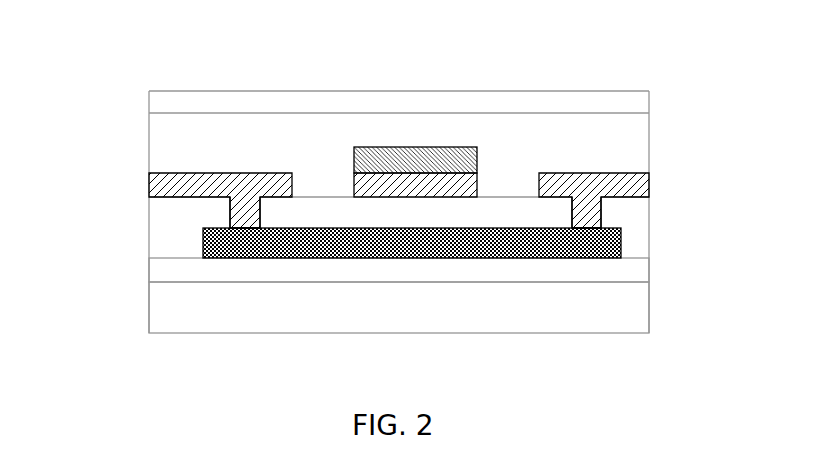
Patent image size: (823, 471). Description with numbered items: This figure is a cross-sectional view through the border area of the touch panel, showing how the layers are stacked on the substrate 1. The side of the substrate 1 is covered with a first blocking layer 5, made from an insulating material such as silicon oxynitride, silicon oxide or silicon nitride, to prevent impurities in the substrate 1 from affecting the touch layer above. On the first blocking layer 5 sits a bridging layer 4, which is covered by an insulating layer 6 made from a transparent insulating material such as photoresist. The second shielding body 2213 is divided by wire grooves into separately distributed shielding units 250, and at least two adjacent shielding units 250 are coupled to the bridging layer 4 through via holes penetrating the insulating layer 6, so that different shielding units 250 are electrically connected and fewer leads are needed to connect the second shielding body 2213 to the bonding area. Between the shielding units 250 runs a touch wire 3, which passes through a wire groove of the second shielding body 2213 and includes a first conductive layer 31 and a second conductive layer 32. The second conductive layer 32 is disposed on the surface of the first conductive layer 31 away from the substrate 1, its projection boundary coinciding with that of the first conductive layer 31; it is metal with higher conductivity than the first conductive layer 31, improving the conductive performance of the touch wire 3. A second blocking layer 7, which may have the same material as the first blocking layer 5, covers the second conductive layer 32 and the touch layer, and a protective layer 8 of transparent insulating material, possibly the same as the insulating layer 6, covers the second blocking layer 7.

The substrate 1 is at (412, 334).
The first blocking layer 5 is at (640, 275).
The bridging layer 4 is at (630, 240).
The insulating layer 6 is at (640, 149).
The second blocking layer 7 is at (157, 138).
The protective layer 8 is at (172, 96).
The shielding unit 250 is at (152, 181).
The second shielding body 2213 is at (88, 201).
The touch wire 3 is at (415, 108).
The first conductive layer 31 is at (437, 182).
The second conductive layer 32 is at (395, 173).